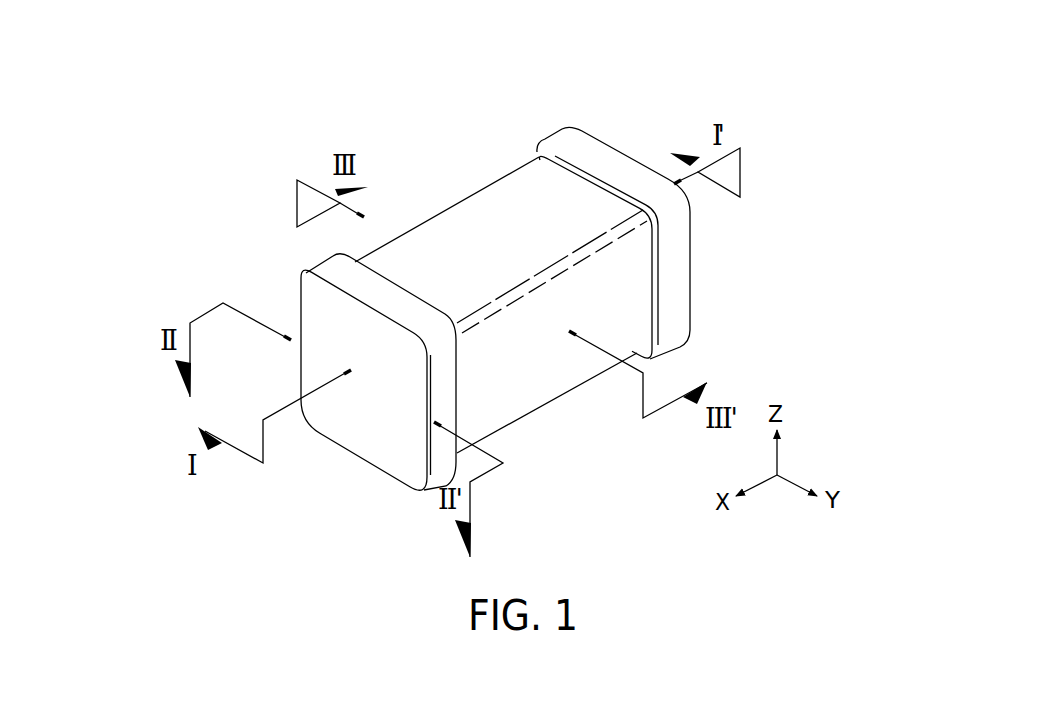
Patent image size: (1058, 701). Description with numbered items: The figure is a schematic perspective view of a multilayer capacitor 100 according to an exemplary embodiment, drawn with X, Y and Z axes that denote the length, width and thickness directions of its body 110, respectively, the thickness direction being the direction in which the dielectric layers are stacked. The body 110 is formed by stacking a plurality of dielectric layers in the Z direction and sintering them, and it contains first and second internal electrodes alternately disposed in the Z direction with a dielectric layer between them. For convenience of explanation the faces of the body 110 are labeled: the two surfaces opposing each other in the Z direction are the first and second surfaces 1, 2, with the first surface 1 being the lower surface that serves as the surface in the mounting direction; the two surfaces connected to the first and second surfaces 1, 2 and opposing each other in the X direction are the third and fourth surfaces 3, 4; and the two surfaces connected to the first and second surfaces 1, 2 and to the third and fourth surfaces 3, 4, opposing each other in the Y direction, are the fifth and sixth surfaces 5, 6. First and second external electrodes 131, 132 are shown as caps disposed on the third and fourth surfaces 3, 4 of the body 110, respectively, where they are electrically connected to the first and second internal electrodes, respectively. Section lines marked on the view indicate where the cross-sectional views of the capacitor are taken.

The multilayer capacitor 100 is at (522, 32).
The body 110 is at (512, 203).
The first surface 1 is at (497, 370).
The second surface 2 is at (487, 203).
The third surface 3 is at (372, 420).
The fourth surface 4 is at (612, 133).
The fifth surface 5 is at (547, 370).
The sixth surface 6 is at (452, 240).
The first external electrode 131 is at (382, 448).
The second external electrode 132 is at (668, 301).